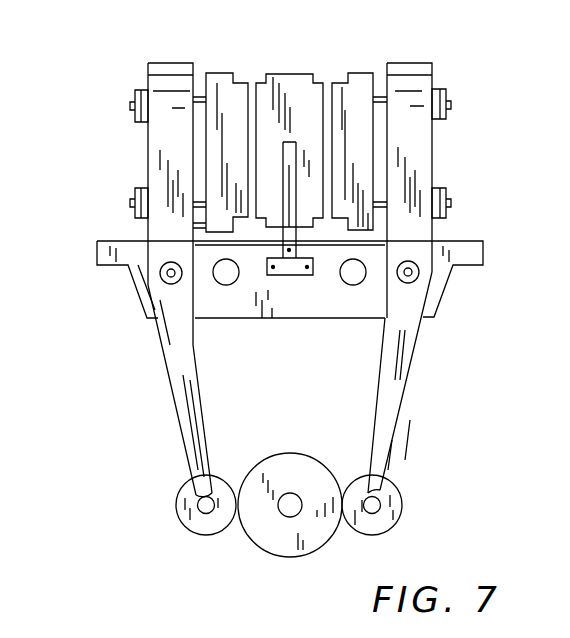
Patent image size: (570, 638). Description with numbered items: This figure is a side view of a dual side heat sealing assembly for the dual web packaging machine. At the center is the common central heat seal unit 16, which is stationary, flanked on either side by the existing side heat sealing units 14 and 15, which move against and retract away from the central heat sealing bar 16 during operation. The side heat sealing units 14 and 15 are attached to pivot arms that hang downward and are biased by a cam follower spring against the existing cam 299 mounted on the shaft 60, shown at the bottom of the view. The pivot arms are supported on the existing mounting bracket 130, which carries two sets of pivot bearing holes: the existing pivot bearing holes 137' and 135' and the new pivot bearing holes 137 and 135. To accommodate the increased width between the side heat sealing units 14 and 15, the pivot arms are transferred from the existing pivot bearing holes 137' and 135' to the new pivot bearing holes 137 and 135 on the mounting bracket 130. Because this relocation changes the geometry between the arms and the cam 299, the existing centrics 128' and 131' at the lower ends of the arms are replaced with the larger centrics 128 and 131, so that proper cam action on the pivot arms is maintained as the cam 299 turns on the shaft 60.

The side heat sealing unit 14 is at (170, 63).
The central heat seal unit 16 is at (299, 74).
The side heat sealing unit 15 is at (412, 63).
The mounting bracket 130 is at (498, 250).
The pivot bearing hole 137 is at (151, 378).
The pivot bearing hole 137' is at (244, 314).
The pivot bearing hole 135' is at (334, 314).
The pivot bearing hole 135 is at (429, 377).
The centric 128 is at (168, 516).
The centric 128' is at (157, 482).
The centric 131 is at (427, 505).
The centric 131' is at (436, 484).
The cam 299 is at (288, 545).
The shaft 60 is at (289, 505).